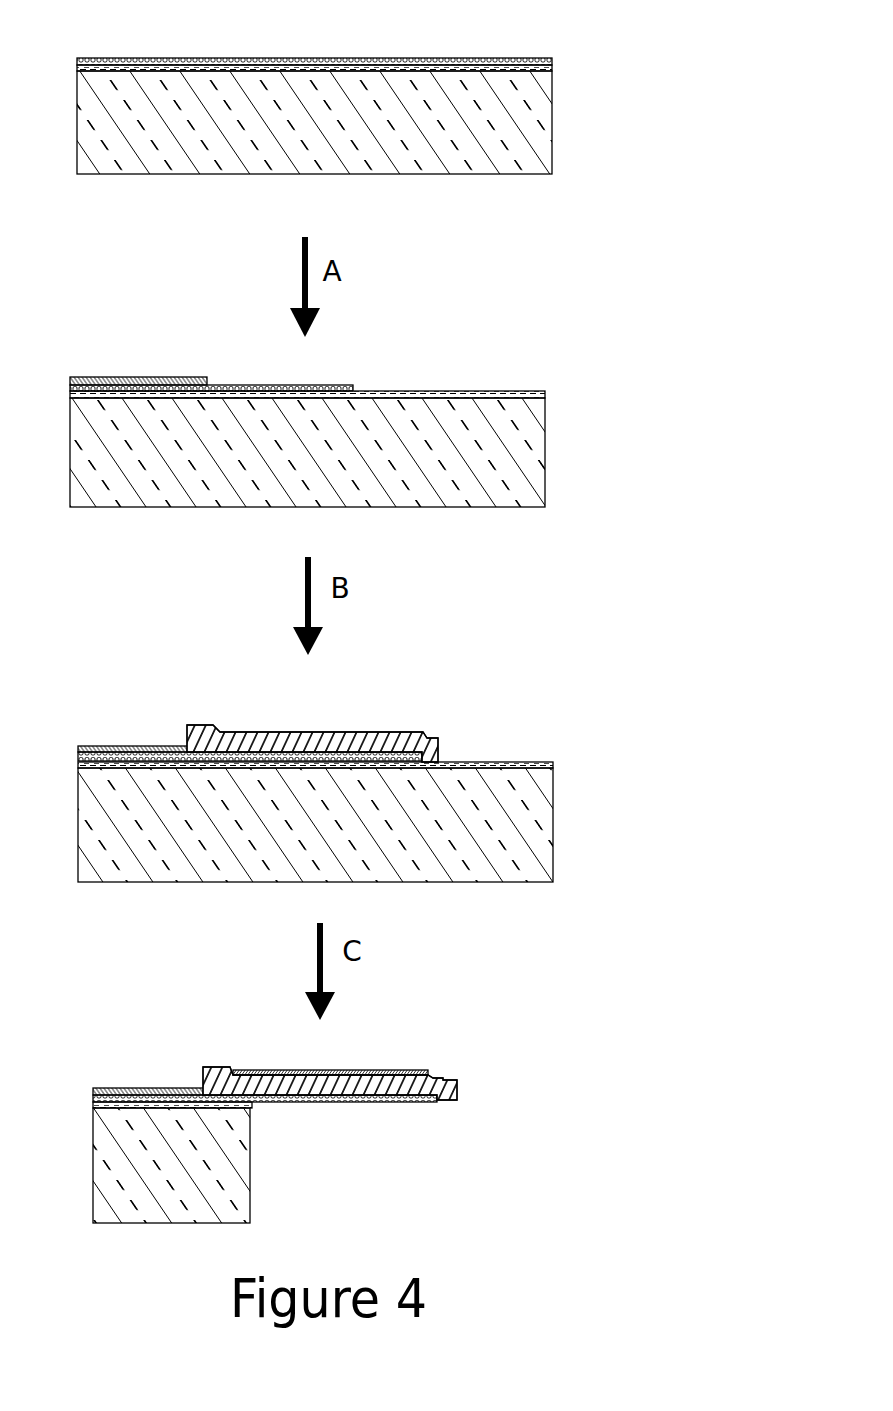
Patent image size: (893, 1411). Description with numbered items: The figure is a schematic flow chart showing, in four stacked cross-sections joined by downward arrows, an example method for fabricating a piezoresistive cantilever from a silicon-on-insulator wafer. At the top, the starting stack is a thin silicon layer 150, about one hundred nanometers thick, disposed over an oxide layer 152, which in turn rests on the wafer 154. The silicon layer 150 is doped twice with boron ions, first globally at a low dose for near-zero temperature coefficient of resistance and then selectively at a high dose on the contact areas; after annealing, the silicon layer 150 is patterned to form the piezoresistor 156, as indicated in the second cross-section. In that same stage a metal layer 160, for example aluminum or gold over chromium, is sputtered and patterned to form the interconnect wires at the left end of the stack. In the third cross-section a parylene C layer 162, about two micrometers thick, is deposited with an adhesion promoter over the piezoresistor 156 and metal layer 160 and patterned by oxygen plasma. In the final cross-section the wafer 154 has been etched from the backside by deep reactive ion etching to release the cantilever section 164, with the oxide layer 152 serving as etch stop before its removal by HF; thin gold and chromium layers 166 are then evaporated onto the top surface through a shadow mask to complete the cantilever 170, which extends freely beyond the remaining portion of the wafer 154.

The silicon layer 150 is at (157, 65).
The oxide layer 152 is at (233, 62).
The wafer 154 is at (325, 152).
The piezoresistor 156 is at (363, 330).
The metal layer 160 is at (167, 380).
The parylene C layer 162 is at (340, 743).
The cantilever section 164 is at (383, 1130).
The gold and chromium layers 166 is at (283, 1070).
The cantilever 170 is at (390, 1047).